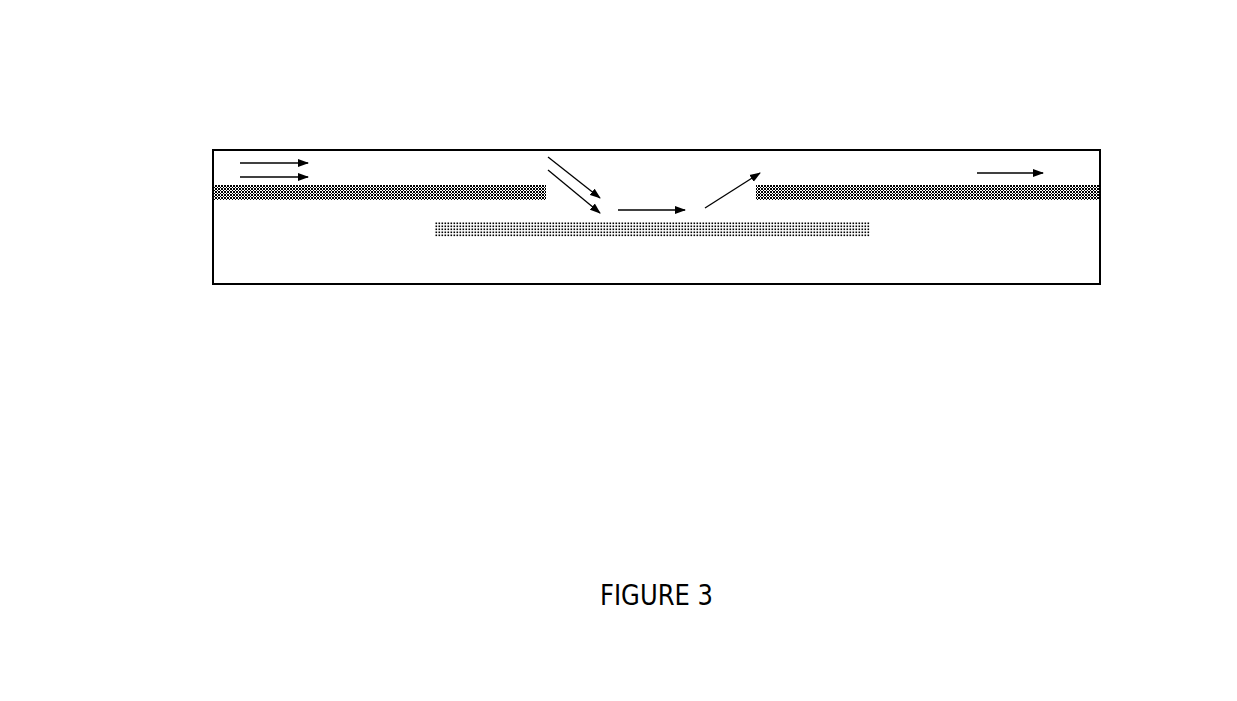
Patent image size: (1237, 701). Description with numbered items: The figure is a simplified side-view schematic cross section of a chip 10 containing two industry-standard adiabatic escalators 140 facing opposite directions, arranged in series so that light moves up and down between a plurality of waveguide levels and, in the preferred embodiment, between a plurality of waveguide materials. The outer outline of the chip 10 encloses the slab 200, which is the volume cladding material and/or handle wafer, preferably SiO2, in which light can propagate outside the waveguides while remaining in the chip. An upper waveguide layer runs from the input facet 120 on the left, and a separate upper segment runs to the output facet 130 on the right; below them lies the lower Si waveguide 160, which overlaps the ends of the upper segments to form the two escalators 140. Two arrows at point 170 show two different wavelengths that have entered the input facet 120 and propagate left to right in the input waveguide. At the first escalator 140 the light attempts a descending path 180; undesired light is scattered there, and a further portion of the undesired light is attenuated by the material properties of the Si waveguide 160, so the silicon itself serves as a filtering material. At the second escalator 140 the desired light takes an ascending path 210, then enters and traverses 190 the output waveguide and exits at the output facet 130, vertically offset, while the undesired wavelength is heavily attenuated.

The chip 10 is at (207, 148).
The input facet 120 is at (202, 187).
The output facet 130 is at (1110, 193).
The evanescent adiabatic escalator 140 is at (480, 250).
The Si waveguide 160 is at (645, 250).
The arrow indicating light propagation 170 is at (273, 143).
The descending path 180 is at (585, 170).
The light traversing output waveguide 190 is at (1007, 167).
The slab 200 is at (297, 262).
The ascending path 210 is at (733, 175).